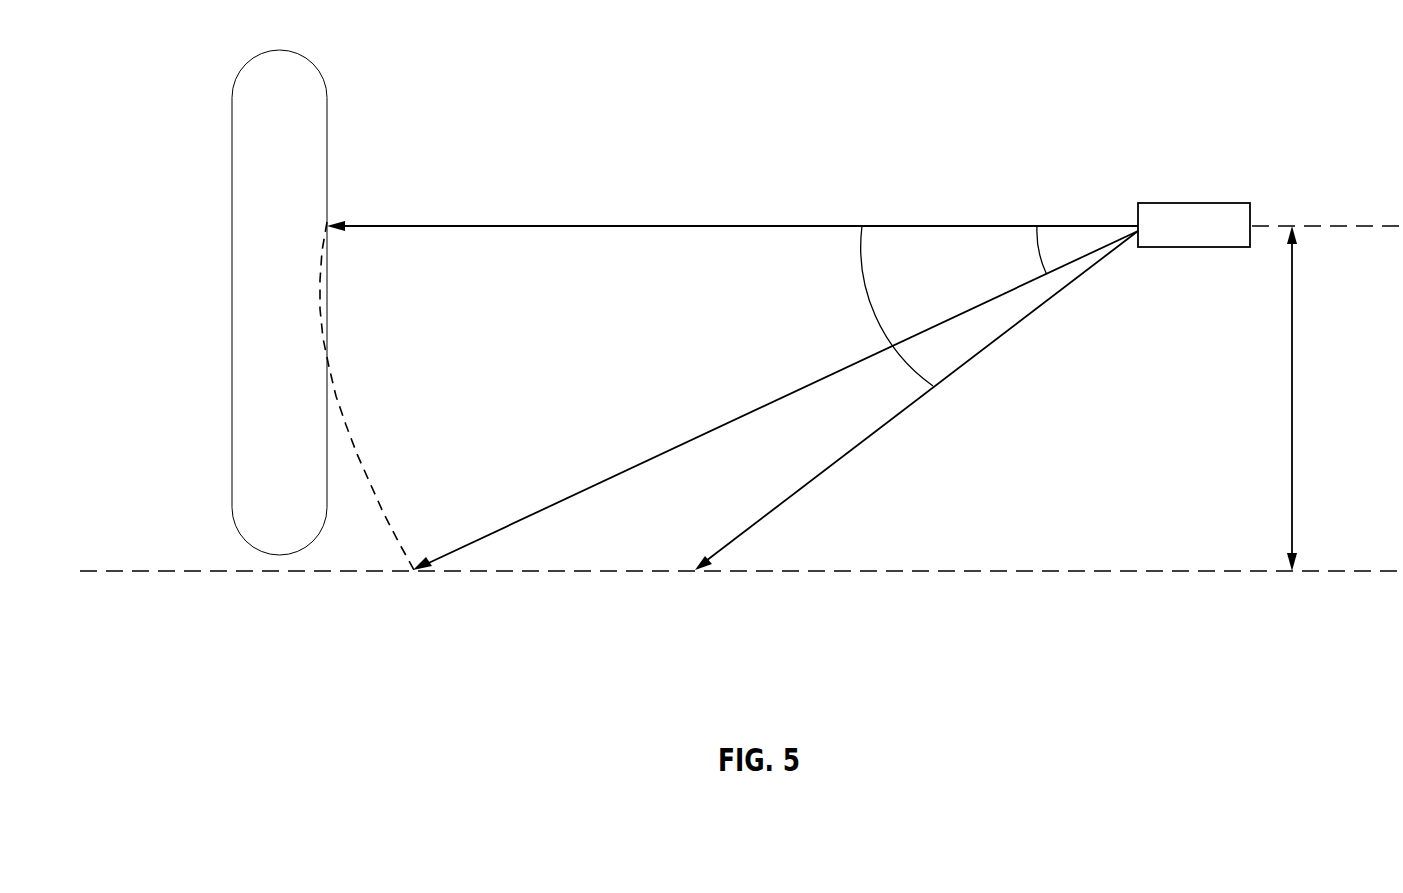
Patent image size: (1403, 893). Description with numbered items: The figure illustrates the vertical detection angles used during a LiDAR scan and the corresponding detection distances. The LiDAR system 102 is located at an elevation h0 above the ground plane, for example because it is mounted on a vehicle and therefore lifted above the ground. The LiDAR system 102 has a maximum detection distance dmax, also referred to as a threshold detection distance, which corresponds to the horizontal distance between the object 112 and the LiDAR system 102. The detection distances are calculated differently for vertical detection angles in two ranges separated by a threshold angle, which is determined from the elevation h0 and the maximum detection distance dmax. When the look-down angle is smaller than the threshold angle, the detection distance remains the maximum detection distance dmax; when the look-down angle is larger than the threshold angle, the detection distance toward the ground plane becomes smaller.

The object 112 is at (341, 113).
The LiDAR system 102 is at (1189, 188).
The maximum detection distance dmax is at (732, 378).
The elevation h0 is at (1308, 398).